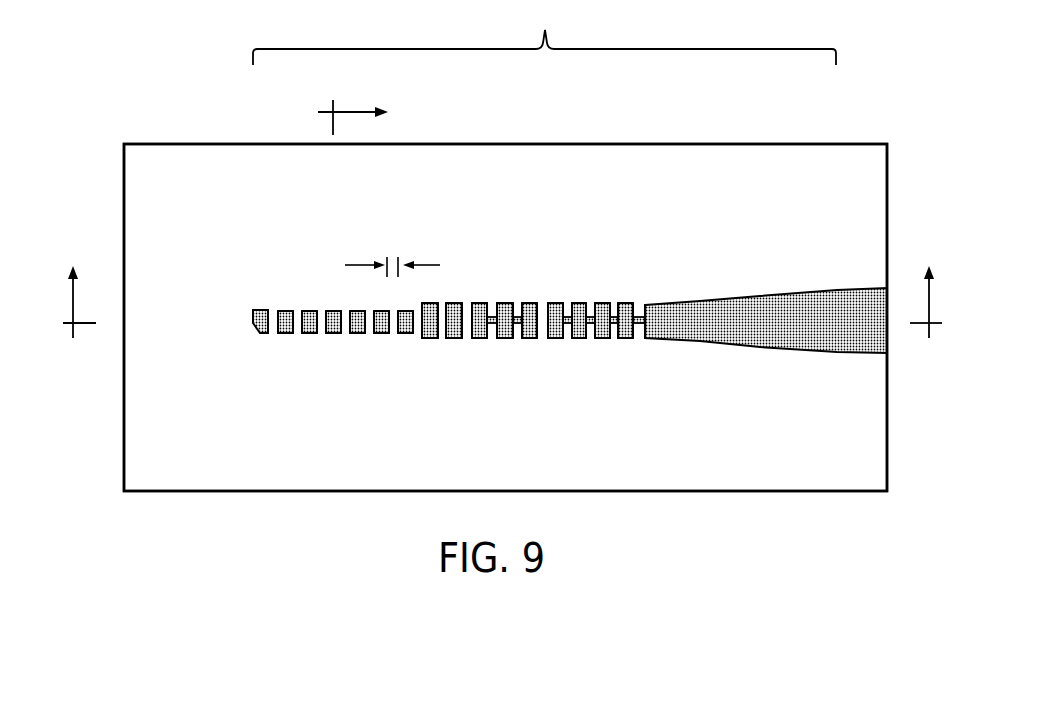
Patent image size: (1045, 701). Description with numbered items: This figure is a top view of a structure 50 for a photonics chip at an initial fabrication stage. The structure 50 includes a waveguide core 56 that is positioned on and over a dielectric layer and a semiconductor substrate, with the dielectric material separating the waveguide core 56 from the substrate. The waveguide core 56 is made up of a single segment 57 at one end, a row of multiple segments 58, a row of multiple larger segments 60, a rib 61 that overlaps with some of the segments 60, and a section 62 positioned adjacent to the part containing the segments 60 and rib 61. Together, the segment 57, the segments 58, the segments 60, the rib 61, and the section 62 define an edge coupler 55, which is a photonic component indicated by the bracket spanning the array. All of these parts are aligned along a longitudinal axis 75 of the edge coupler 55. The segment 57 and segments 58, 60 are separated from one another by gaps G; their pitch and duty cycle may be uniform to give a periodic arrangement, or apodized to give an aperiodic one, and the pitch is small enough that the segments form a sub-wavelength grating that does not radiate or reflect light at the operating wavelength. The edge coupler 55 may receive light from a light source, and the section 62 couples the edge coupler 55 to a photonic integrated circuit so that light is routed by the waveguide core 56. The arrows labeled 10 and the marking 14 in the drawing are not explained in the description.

The section line 10 is at (504, 219).
The substrate 14 is at (157, 418).
The structure 50 is at (113, 106).
The edge coupler 55 is at (544, 33).
The waveguide core 56 is at (751, 260).
The segment 57 is at (259, 316).
The segments 58 is at (335, 332).
The segments 60 is at (477, 333).
The rib 61 is at (558, 333).
The section 62 is at (715, 323).
The longitudinal axis 75 is at (518, 322).
The gaps G is at (392, 251).